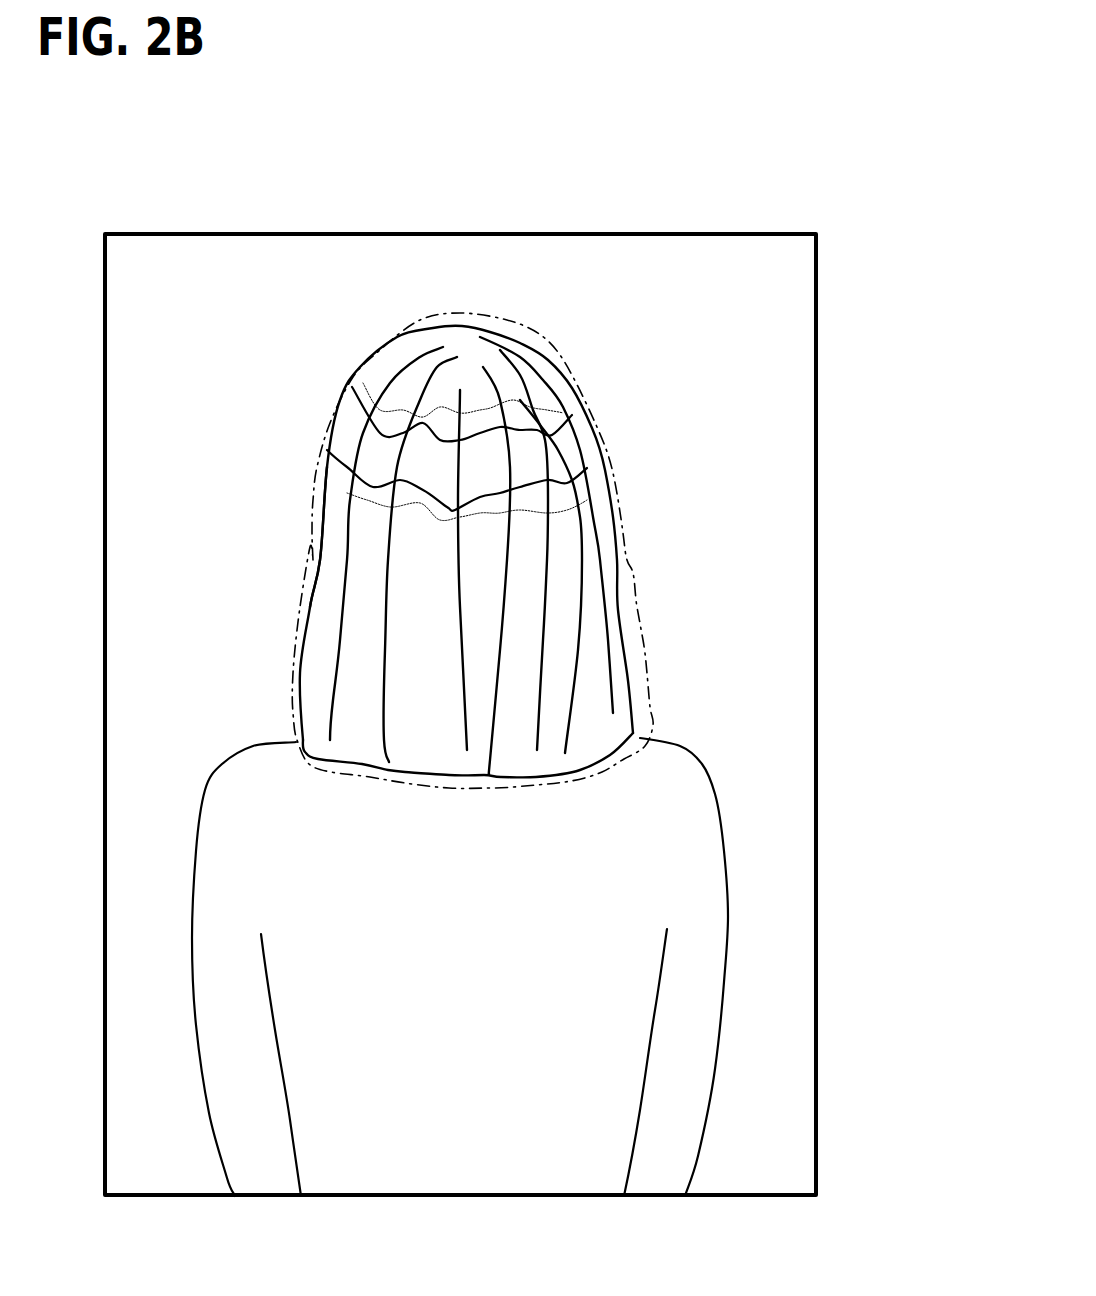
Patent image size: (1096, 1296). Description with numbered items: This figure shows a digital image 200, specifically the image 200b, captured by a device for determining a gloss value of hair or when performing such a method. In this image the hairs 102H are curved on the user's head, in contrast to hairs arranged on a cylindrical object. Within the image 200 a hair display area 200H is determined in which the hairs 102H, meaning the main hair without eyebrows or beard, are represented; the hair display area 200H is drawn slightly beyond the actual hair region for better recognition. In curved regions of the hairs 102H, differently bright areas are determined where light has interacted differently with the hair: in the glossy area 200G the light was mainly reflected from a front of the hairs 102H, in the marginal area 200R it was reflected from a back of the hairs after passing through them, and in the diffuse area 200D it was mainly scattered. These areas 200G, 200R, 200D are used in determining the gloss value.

The digital image 200 is at (747, 133).
The digital image 200b is at (460, 967).
The glossy area 200G is at (337, 420).
The marginal area 200R is at (340, 478).
The diffuse area 200D is at (327, 607).
The hairs 102H is at (633, 660).
The hair display area 200H is at (653, 720).